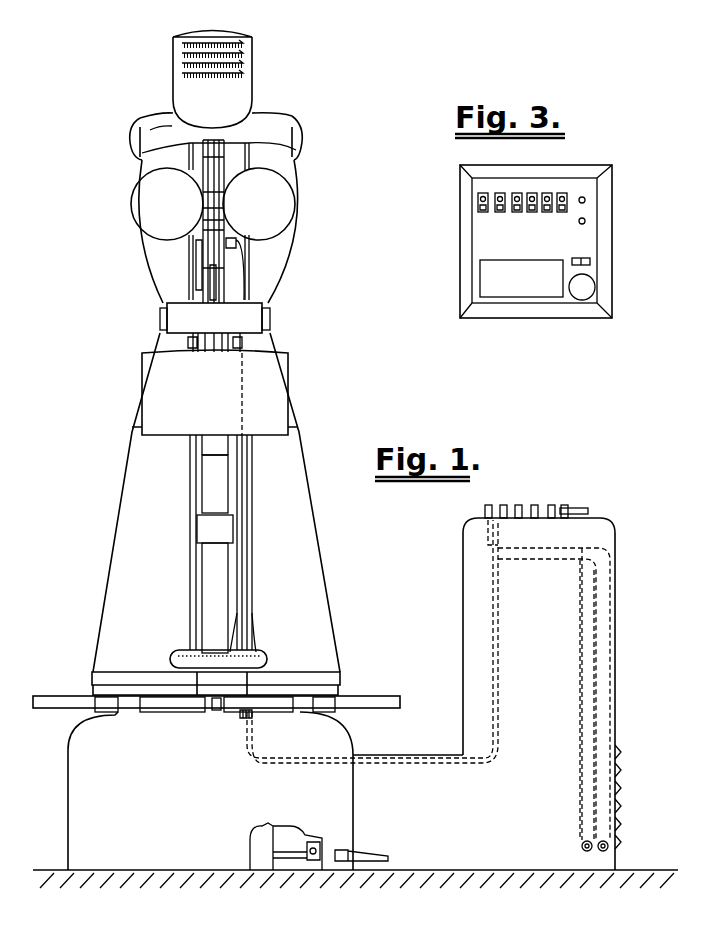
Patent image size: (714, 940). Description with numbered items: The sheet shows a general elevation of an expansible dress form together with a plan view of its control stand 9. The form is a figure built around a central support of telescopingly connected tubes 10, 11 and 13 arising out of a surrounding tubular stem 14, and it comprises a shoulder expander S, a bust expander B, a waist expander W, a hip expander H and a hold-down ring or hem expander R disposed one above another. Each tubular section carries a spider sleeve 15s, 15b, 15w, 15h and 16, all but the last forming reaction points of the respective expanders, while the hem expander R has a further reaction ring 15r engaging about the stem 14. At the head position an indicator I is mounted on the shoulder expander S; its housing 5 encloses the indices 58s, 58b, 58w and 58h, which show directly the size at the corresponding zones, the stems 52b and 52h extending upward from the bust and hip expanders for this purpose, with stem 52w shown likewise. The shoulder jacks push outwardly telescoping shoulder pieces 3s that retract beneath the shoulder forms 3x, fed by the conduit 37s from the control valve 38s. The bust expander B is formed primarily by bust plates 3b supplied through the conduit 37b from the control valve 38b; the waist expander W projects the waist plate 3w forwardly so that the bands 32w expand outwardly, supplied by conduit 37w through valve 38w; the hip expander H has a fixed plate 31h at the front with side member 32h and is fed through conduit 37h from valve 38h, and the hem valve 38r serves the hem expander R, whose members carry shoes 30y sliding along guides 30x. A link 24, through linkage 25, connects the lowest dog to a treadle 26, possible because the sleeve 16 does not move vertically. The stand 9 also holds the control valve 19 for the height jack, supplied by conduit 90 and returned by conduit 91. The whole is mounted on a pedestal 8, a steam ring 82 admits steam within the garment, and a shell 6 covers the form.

In FIG. 1, the indicator I is at (173, 43).
In FIG. 1, the housing 5 is at (177, 85).
In FIG. 1, the index 58s is at (245, 42).
In FIG. 1, the index 58b is at (245, 53).
In FIG. 1, the index 58w is at (245, 63).
In FIG. 1, the index 58h is at (245, 73).
In FIG. 1, the shoulder expander S is at (273, 113).
In FIG. 1, the sleeve 15s is at (150, 123).
In FIG. 1, the shoulder form 3x is at (148, 123).
In FIG. 1, the shoulder piece 3s is at (132, 137).
In FIG. 1, the stem 52b is at (233, 143).
In FIG. 1, the tube 10 is at (217, 172).
In FIG. 1, the bust expander B is at (132, 204).
In FIG. 1, the bust plate 3b is at (259, 204).
In FIG. 1, the cover shell 6 is at (295, 230).
In FIG. 1, the waist adjusting rod 52w is at (203, 240).
In FIG. 1, the sleeve 15b is at (220, 253).
In FIG. 1, the stem 52h is at (213, 280).
In FIG. 1, the tube 11 is at (220, 283).
In FIG. 1, the waist expander W is at (160, 317).
In FIG. 1, the waist plate 3w is at (214, 319).
In FIG. 1, the band 32w is at (268, 318).
In FIG. 1, the hip expander H is at (132, 387).
In FIG. 1, the fixed plate 31h is at (182, 386).
In FIG. 1, the sleeve 15w is at (222, 347).
In FIG. 1, the hip side panel 32h is at (290, 387).
In FIG. 1, the sleeve 15h is at (207, 443).
In FIG. 1, the supply conduit 37b is at (250, 457).
In FIG. 1, the tube 13 is at (212, 477).
In FIG. 1, the conduit 37s is at (242, 488).
In FIG. 1, the conduit 37w is at (242, 518).
In FIG. 1, the sleeve 16 is at (207, 530).
In FIG. 1, the hip air tube 37h is at (240, 547).
In FIG. 1, the tubular stem 14 is at (210, 565).
In FIG. 1, the link 24 is at (238, 617).
In FIG. 1, the steam ring 82 is at (175, 655).
In FIG. 1, the hem expander R is at (93, 690).
In FIG. 1, the guide 30x is at (67, 708).
In FIG. 1, the shoe 30y is at (108, 708).
In FIG. 1, the ring 15r is at (205, 710).
In FIG. 1, the pedestal 8 is at (80, 817).
In FIG. 1, the linkage 25 is at (250, 840).
In FIG. 1, the treadle 26 is at (385, 862).
In FIG. 1, the control stand 9 is at (613, 605).
In FIG. 1, the control valve 38s is at (488, 508).
In FIG. 3, the control valve 38s is at (483, 190).
In FIG. 1, the control valve 38b is at (515, 498).
In FIG. 3, the control valve 38b is at (500, 190).
In FIG. 1, the valve 38w is at (555, 498).
In FIG. 3, the valve 38w is at (517, 190).
In FIG. 1, the control valve 38h is at (596, 497).
In FIG. 3, the control valve 38h is at (532, 193).
In FIG. 1, the control valve 38r is at (551, 508).
In FIG. 3, the control valve 38r is at (547, 197).
In FIG. 1, the control valve 19 is at (575, 511).
In FIG. 3, the control valve 19 is at (572, 190).
In FIG. 1, the conduit 91 is at (587, 855).
In FIG. 1, the conduit 90 is at (603, 852).